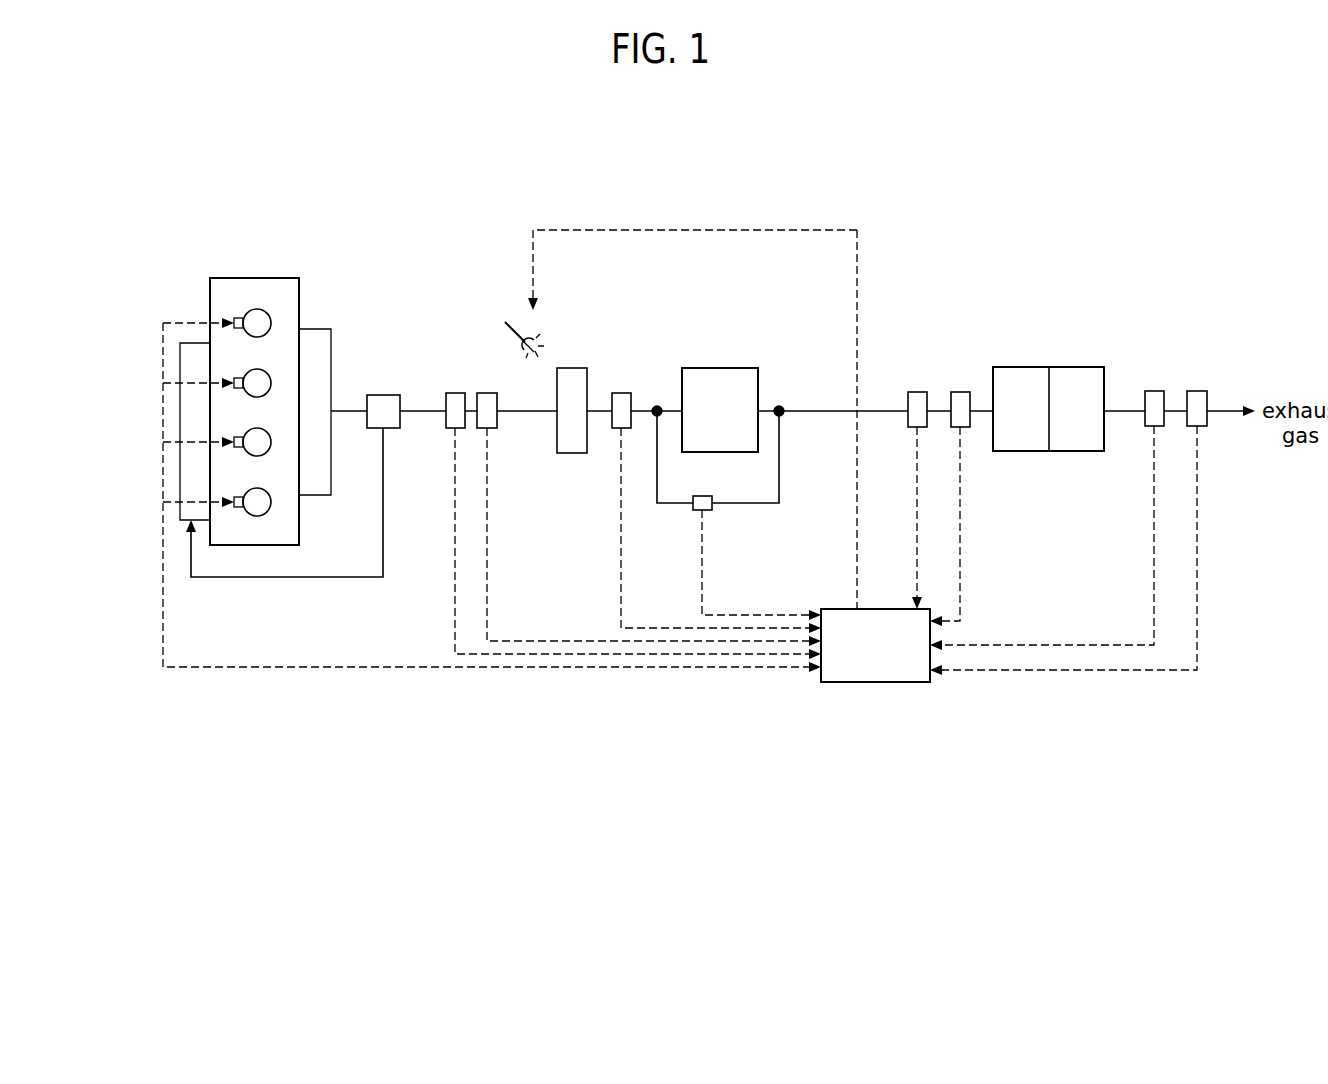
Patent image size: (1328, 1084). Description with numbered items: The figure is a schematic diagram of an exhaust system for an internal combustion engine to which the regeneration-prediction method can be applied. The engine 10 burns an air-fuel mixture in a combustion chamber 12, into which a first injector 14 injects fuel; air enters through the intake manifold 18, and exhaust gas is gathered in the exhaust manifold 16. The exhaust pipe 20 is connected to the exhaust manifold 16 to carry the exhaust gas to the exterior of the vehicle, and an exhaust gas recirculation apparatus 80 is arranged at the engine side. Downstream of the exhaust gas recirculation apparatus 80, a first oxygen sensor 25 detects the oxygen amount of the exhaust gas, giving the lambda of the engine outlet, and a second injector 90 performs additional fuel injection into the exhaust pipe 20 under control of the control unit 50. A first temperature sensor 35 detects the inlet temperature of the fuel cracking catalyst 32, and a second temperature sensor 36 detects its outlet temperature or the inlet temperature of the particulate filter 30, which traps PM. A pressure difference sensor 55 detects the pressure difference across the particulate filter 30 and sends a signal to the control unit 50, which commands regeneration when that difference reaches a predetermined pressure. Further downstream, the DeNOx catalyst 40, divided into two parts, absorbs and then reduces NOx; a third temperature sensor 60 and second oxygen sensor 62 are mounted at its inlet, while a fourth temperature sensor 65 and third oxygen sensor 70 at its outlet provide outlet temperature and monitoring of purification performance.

The engine 10 is at (311, 256).
The combustion chamber 12 is at (262, 312).
The first injector 14 is at (236, 317).
The exhaust manifold 16 is at (322, 335).
The intake manifold 18 is at (180, 343).
The exhaust pipe 20 is at (413, 410).
The first oxygen sensor 25 is at (455, 392).
The particulate filter 30 is at (739, 328).
The fuel cracking catalyst 32 is at (573, 367).
The first temperature sensor 35 is at (487, 392).
The second temperature sensor 36 is at (622, 392).
The DeNOx catalyst 40 is at (1070, 375).
The control unit 50 is at (893, 680).
The pressure difference sensor 55 is at (696, 510).
The third temperature sensor 60 is at (917, 391).
The second oxygen sensor 62 is at (960, 391).
The fourth temperature sensor 65 is at (1157, 390).
The third oxygen sensor 70 is at (1199, 390).
The exhaust gas recirculation apparatus 80 is at (383, 394).
The second injector 90 is at (507, 322).